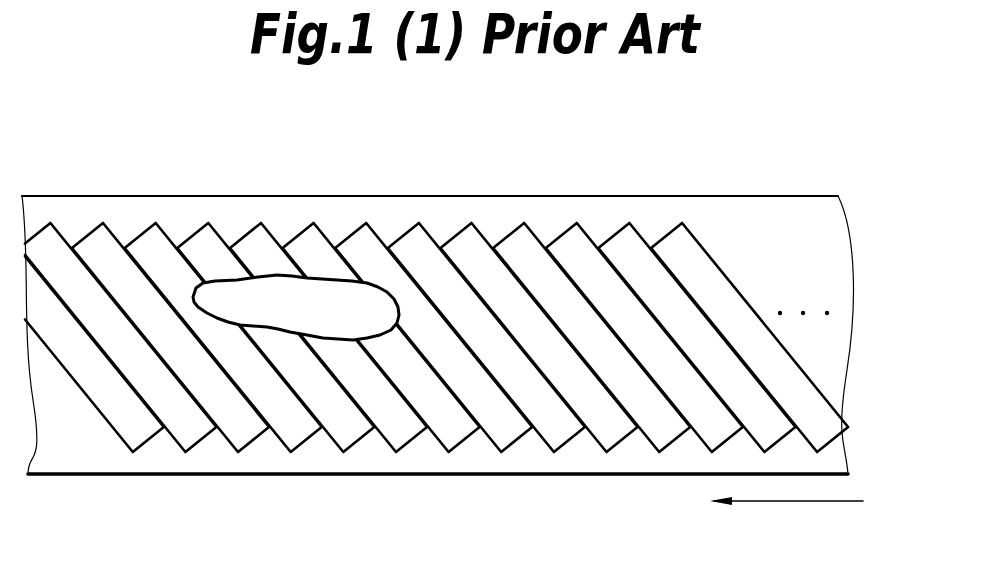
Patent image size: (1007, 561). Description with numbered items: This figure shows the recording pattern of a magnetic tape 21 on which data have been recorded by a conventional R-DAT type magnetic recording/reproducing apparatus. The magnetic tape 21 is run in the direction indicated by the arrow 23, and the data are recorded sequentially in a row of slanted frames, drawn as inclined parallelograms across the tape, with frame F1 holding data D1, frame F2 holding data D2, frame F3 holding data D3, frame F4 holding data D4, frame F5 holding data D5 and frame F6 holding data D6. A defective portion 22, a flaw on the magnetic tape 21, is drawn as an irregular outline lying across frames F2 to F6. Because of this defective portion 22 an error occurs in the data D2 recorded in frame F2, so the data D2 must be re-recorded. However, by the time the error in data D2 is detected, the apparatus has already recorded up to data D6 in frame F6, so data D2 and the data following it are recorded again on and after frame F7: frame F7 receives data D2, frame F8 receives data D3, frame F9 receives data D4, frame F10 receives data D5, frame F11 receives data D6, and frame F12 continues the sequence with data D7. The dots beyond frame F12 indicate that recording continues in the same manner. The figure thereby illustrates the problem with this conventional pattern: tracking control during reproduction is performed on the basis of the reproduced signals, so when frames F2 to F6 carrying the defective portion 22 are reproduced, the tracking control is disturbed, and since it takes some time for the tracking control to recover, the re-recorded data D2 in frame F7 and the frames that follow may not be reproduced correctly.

The magnetic tape 21 is at (71, 457).
The defective portion 22 is at (297, 317).
The arrow 23 is at (794, 502).
The frame F1 is at (100, 241).
The frame F2 is at (153, 241).
The frame F3 is at (205, 241).
The frame F4 is at (258, 241).
The frame F5 is at (311, 241).
The frame F6 is at (363, 241).
The frame F7 is at (416, 241).
The frame F8 is at (468, 241).
The frame F9 is at (521, 241).
The frame F10 is at (574, 241).
The frame F11 is at (626, 241).
The frame F12 is at (679, 241).
The data D1 is at (205, 383).
The data D2 is at (389, 383).
The data D3 is at (441, 383).
The data D4 is at (494, 383).
The data D5 is at (547, 383).
The data D6 is at (599, 383).
The data D7 is at (784, 383).